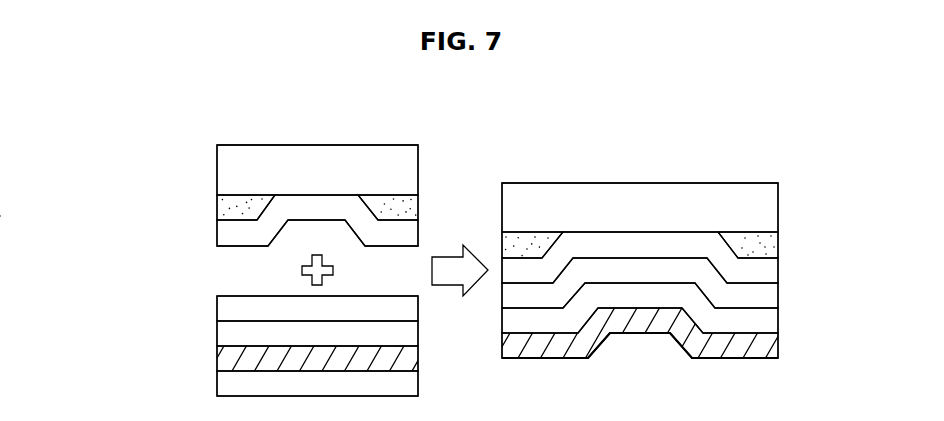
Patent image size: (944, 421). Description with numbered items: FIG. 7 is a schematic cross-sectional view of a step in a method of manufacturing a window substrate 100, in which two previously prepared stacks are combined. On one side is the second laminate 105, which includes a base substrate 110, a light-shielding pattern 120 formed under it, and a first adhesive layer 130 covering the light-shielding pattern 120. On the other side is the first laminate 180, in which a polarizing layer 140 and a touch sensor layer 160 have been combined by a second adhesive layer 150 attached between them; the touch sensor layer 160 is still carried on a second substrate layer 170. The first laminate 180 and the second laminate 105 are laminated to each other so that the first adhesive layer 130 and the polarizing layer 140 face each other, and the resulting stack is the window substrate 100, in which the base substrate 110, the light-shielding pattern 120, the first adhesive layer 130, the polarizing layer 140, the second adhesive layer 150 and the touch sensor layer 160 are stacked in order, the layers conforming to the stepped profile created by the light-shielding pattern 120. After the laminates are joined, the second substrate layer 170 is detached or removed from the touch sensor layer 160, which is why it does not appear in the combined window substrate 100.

The window substrate 100 is at (503, 158).
The second laminate 105 is at (142, 163).
The base substrate 110 is at (233, 170).
The light-shielding pattern 120 is at (233, 206).
The first adhesive layer 130 is at (233, 231).
The polarizing layer 140 is at (233, 308).
The second adhesive layer 150 is at (233, 333).
The touch sensor layer 160 is at (233, 356).
The second substrate layer 170 is at (233, 383).
The first laminate 180 is at (142, 302).